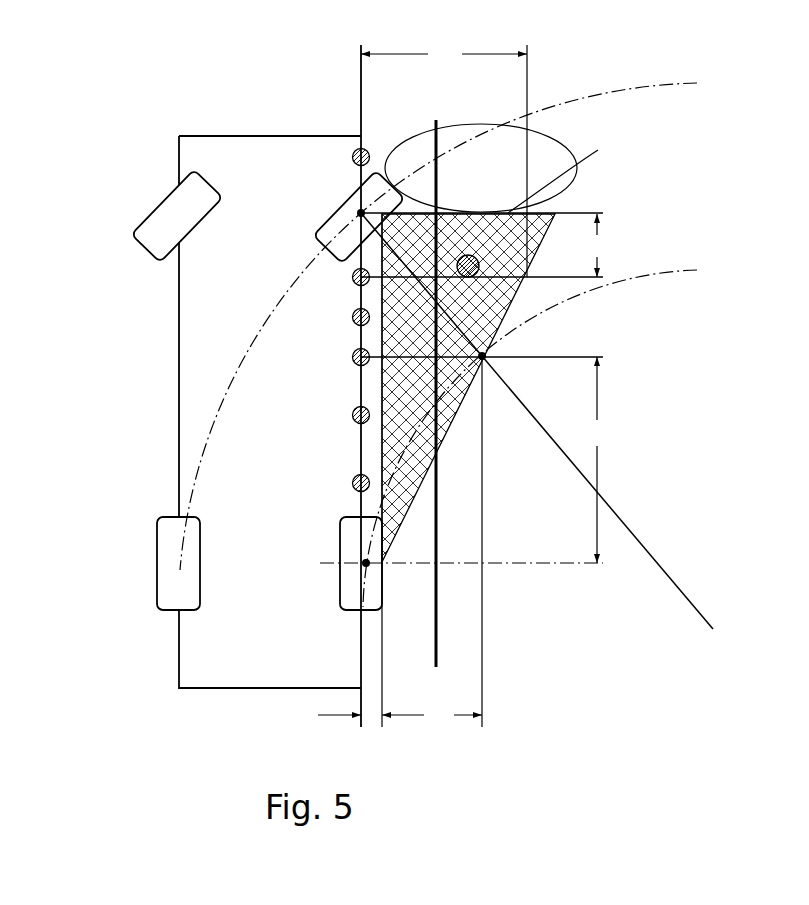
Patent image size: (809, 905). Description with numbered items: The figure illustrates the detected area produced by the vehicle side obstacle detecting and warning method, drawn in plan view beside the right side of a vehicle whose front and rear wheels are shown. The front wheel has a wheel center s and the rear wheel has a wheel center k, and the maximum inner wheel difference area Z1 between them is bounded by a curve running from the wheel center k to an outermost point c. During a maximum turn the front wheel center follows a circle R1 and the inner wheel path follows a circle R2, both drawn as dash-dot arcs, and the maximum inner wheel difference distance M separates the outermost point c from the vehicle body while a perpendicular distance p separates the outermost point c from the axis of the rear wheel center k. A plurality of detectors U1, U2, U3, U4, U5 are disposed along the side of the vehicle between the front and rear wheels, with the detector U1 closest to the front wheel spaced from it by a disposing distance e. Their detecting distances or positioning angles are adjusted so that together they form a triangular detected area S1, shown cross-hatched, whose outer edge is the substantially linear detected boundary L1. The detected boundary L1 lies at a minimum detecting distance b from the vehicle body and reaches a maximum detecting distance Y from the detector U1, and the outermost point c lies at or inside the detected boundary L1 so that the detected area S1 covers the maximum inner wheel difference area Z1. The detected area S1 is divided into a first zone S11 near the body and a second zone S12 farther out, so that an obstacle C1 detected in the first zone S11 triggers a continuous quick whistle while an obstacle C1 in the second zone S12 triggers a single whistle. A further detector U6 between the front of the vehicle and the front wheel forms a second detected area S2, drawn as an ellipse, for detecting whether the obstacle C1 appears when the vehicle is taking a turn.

The detector U1 is at (352, 277).
The detector U2 is at (352, 317).
The detector U3 is at (352, 360).
The detector U4 is at (352, 417).
The detector U5 is at (352, 485).
The detector U6 is at (352, 155).
The detected area S1 is at (558, 210).
The first zone S11 is at (402, 423).
The second zone S12 is at (463, 303).
The second detected area S2 is at (406, 140).
The obstacle C1 is at (470, 256).
The maximum inner wheel difference area Z1 is at (435, 378).
The detected boundary L1 is at (598, 150).
The circle of the front wheel R1 is at (466, 321).
The circle of the rear wheel R2 is at (557, 431).
The maximum detecting distance Y is at (444, 55).
The disposing distance e is at (597, 245).
The perpendicular distance p is at (596, 460).
The minimum detecting distance b is at (330, 717).
The maximum inner wheel difference distance M is at (432, 717).
The wheel center of the front wheel s is at (354, 230).
The outermost point c is at (483, 338).
The wheel center of the rear wheel k is at (358, 549).